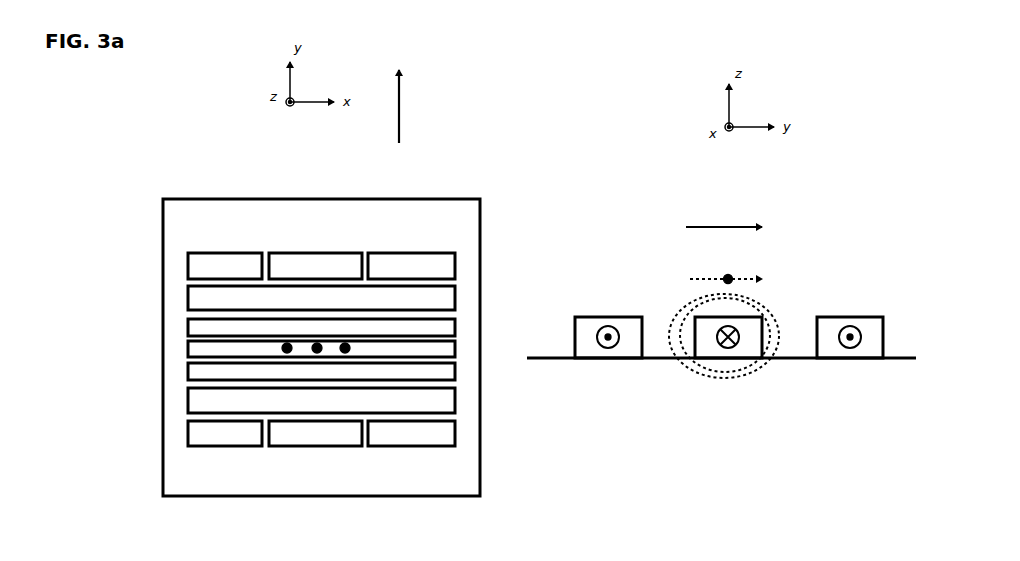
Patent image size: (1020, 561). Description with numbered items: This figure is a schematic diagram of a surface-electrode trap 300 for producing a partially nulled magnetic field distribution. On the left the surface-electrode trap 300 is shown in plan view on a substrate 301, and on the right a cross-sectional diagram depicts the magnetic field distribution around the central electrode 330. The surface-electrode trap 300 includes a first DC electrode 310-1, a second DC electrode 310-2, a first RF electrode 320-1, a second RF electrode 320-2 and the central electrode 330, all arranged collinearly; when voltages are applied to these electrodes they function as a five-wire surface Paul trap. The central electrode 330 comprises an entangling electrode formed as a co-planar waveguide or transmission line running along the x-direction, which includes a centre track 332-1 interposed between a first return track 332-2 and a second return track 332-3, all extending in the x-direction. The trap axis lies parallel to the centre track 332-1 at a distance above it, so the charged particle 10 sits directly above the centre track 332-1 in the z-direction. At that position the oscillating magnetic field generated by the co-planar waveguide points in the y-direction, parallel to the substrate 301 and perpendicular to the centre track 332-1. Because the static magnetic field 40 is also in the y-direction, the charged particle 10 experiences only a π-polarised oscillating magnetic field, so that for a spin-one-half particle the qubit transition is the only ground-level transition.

The charged particle 10 is at (308, 352).
The static magnetic field 40 is at (431, 93).
The surface-electrode trap 300 is at (307, 188).
The substrate 301 is at (211, 211).
The first DC electrode 310-1 is at (188, 263).
The second DC electrode 310-2 is at (188, 425).
The first RF electrode 320-1 is at (188, 293).
The second RF electrode 320-2 is at (188, 396).
The central electrode 330 is at (445, 335).
The centre track 332-1 is at (188, 349).
The first return track 332-2 is at (188, 325).
The second return track 332-3 is at (188, 371).